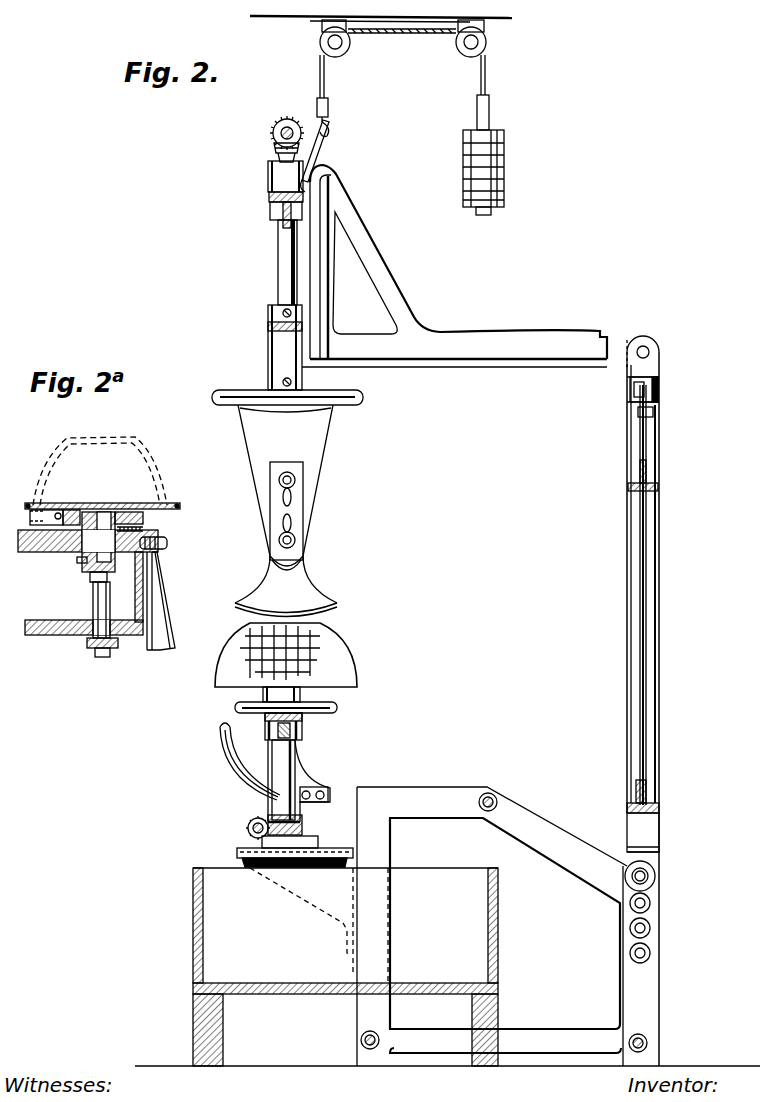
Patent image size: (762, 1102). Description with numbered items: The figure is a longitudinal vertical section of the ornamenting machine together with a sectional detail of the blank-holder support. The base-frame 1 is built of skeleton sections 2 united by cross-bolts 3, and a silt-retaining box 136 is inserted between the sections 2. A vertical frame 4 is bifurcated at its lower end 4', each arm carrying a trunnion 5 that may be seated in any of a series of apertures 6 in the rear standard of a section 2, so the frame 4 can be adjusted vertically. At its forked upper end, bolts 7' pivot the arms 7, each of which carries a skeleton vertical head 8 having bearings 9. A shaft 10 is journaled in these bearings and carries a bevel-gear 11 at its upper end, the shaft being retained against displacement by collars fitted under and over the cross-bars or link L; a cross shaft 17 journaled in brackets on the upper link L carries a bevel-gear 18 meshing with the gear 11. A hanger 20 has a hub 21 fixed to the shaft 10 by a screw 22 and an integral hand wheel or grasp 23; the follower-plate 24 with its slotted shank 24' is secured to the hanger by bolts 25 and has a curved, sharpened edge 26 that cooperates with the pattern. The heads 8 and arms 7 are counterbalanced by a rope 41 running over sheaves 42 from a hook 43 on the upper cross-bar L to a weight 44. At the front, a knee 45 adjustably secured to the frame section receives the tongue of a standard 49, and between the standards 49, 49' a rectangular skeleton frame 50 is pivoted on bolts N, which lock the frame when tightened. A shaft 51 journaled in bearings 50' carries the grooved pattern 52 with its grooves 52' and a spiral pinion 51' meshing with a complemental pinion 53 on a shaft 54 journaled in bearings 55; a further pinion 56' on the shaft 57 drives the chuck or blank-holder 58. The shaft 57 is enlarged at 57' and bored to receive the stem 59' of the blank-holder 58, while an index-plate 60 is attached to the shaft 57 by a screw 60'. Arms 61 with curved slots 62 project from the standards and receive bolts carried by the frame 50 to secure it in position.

In FIG. 2, the base-frame 1 is at (447, 967).
In FIG. 2, the skeleton sections 2 is at (640, 992).
In FIG. 2, the cross-bolts 3 is at (487, 794).
In FIG. 2, the vertical frame 4 is at (660, 709).
In FIG. 2, the bifurcated lower end 4' is at (661, 832).
In FIG. 2, the trunnion 5 is at (648, 877).
In FIG. 2, the apertures 6 is at (670, 903).
In FIG. 2, the arms 7 is at (458, 262).
In FIG. 2, the bolts 7' is at (675, 416).
In FIG. 2, the vertical head 8 is at (322, 280).
In FIG. 2, the bearings 9 is at (284, 182).
In FIG. 2, the shaft 10 is at (283, 264).
In FIG. 2, the bevel-gear 11 is at (276, 150).
In FIG. 2, the shaft 17 is at (272, 133).
In FIG. 2, the bevel-gear 18 is at (287, 118).
In FIG. 2, the cross-bars or link L is at (272, 198).
In FIG. 2, the hanger 20 is at (285, 480).
In FIG. 2, the hub 21 is at (280, 382).
In FIG. 2, the screw 22 is at (300, 383).
In FIG. 2, the hand wheel or grasp 23 is at (212, 398).
In FIG. 2, the follower-plate 24 is at (286, 579).
In FIG. 2, the slotted shank 24' is at (321, 511).
In FIG. 2, the bolts 25 is at (280, 482).
In FIG. 2, the curved and sharpened edge 26 is at (340, 607).
In FIG. 2, the rope 41 is at (330, 96).
In FIG. 2, the sheaves 42 is at (350, 42).
In FIG. 2, the hook 43 is at (320, 160).
In FIG. 2, the weight 44 is at (504, 172).
In FIG. 2, the knee 45 is at (290, 868).
In FIG. 2, the standard 49 is at (308, 786).
In FIG. 2a, the standard 49' is at (182, 601).
In FIG. 2, the skeleton frame 50 is at (307, 726).
In FIG. 2a, the skeleton frame 50 is at (79, 582).
In FIG. 2, the bearings 50' is at (330, 736).
In FIG. 2, the shaft 51 is at (306, 780).
In FIG. 2, the spiral pinion 51' is at (311, 831).
In FIG. 2, the former or pattern 52 is at (302, 662).
In FIG. 2, the grooves 52' is at (258, 652).
In FIG. 2, the complemental pinion 53 is at (249, 830).
In FIG. 2, the shaft 54 is at (247, 842).
In FIG. 2, the bearings 55 is at (265, 822).
In FIG. 2a, the complemental pinion 56' is at (118, 666).
In FIG. 2a, the shaft 57 is at (75, 610).
In FIG. 2a, the enlarged portion 57' is at (75, 550).
In FIG. 2a, the chuck or holder 58 is at (100, 471).
In FIG. 2a, the stem or shank 59' is at (155, 601).
In FIG. 2a, the index-plate 60 is at (131, 505).
In FIG. 2a, the screw 60' is at (102, 496).
In FIG. 2, the arm 61 is at (222, 760).
In FIG. 2, the curved slot / bolt 62 is at (246, 784).
In FIG. 2, the silt-retaining box 136 is at (412, 926).
In FIG. 2a, the bolts N is at (166, 541).